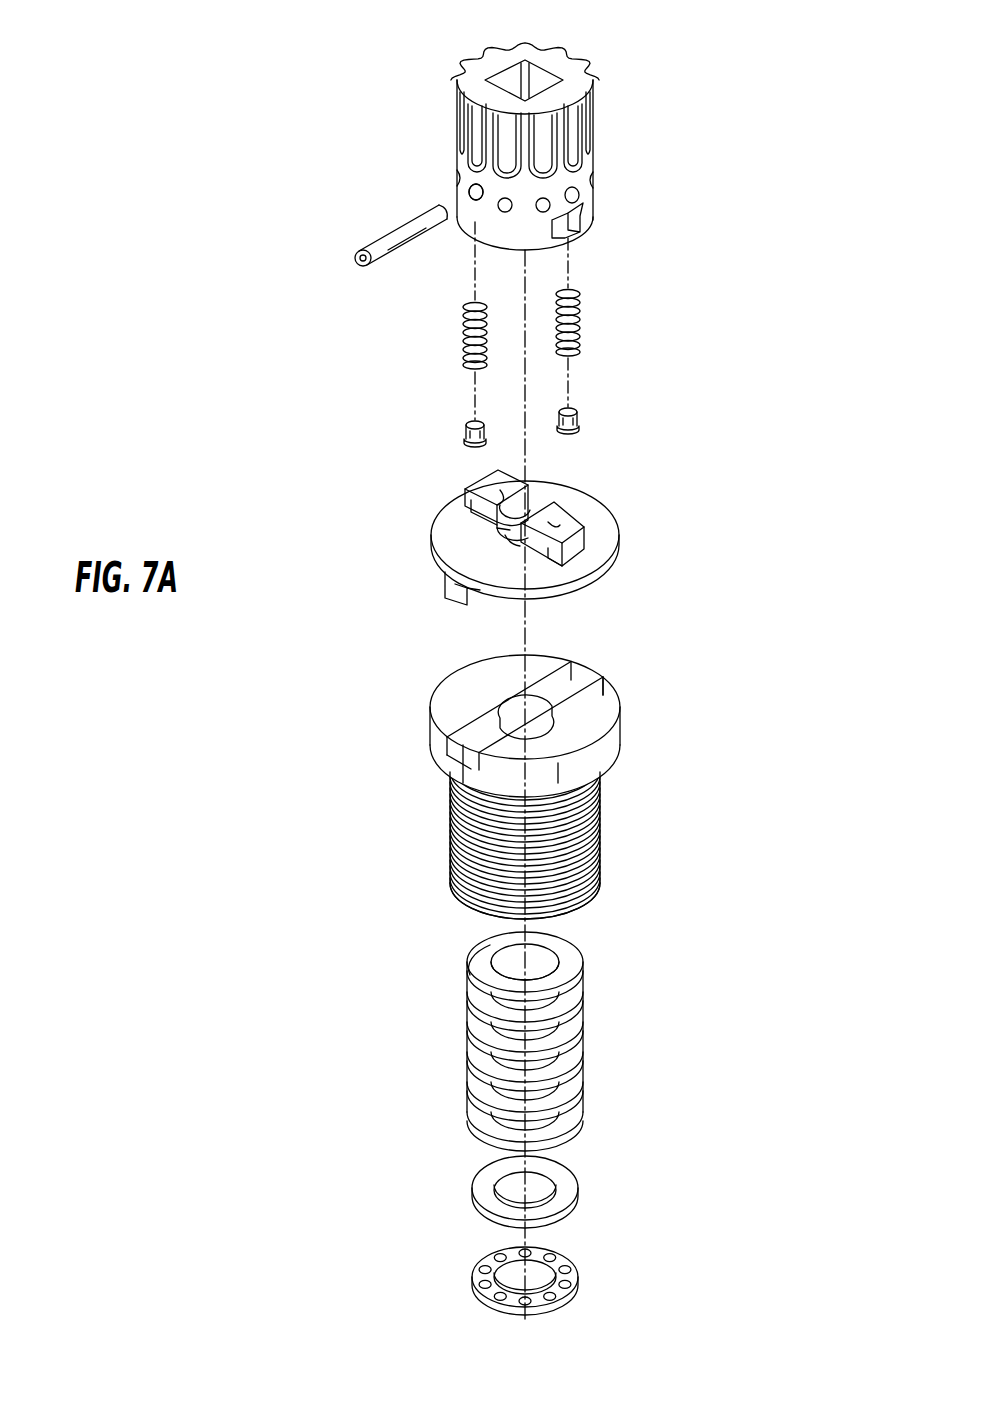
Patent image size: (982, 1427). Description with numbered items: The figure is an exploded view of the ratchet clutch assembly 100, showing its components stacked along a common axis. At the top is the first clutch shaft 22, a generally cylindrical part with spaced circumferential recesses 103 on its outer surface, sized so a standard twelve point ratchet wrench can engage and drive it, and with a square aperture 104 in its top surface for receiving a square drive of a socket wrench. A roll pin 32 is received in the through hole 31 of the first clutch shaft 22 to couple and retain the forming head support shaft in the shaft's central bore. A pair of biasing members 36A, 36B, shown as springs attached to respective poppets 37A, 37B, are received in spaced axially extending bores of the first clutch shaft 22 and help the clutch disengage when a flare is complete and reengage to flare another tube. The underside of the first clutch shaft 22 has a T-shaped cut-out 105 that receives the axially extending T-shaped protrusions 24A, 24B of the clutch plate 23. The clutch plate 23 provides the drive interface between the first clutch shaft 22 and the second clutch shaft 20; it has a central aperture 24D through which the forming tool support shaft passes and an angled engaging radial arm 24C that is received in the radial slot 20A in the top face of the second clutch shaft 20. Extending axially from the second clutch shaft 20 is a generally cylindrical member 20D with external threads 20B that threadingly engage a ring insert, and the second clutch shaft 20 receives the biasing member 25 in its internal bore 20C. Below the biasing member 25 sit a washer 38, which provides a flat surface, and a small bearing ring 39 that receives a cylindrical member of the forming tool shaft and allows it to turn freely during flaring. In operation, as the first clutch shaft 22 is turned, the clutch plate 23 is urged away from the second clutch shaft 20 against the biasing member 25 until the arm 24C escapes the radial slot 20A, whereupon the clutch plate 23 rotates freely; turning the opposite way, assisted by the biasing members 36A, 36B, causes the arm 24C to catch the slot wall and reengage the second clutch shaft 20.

The ratchet clutch assembly 100 is at (300, 435).
The first clutch shaft 22 is at (452, 70).
The square aperture 104 is at (510, 78).
The spaced circumferential recesses 103 is at (572, 148).
The T-shaped cut-out 105 is at (592, 225).
The roll pin 32 is at (420, 212).
The radial slot / through hole 31 is at (476, 199).
The biasing member 36A is at (460, 345).
The biasing member 36B is at (586, 302).
The poppet 37A is at (463, 430).
The poppet 37B is at (583, 412).
The clutch plate 23 is at (620, 528).
The T-shaped protrusion 24A is at (560, 512).
The T-shaped protrusion 24B is at (478, 490).
The angled engaging radial arm 24C is at (455, 605).
The central aperture 24D is at (505, 549).
The second clutch shaft 20 is at (552, 808).
The radial slot 20A is at (445, 765).
The external threads 20B is at (534, 835).
The internal bore 20C is at (470, 915).
The cylindrical member 20D is at (440, 828).
The biasing member 25 is at (585, 990).
The washer 38 is at (578, 1180).
The small bearing ring 39 is at (578, 1275).